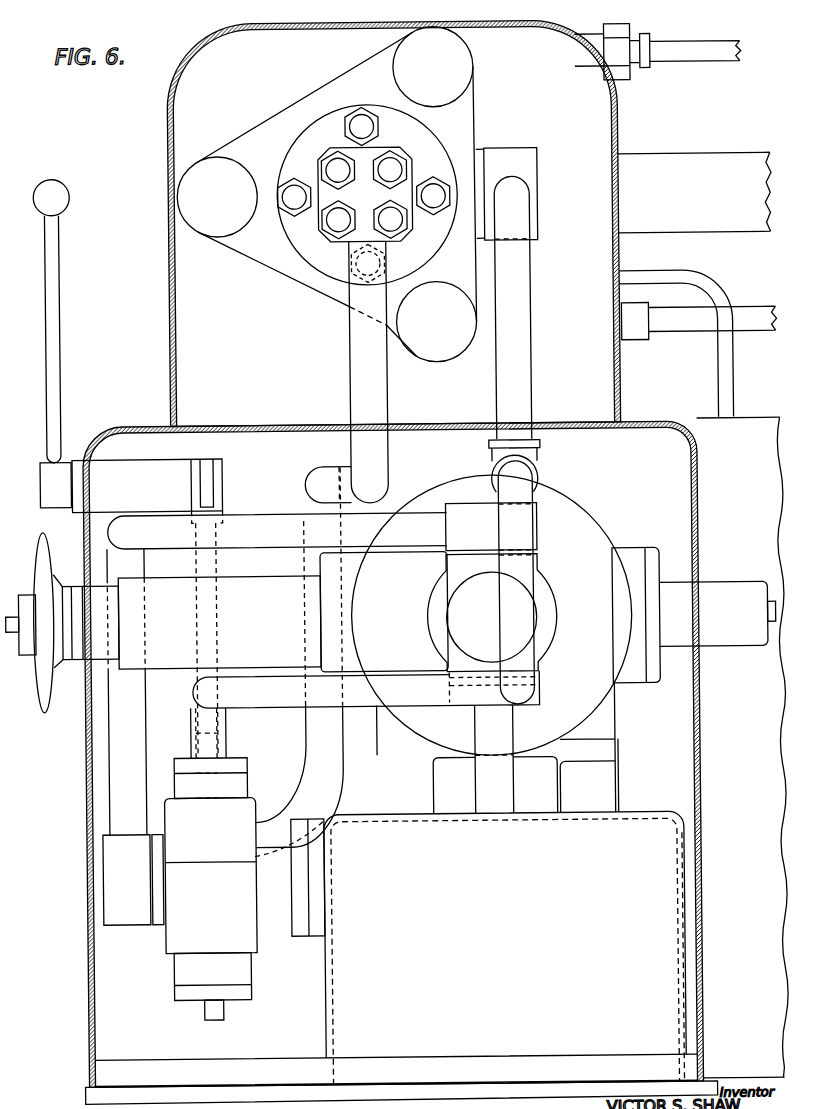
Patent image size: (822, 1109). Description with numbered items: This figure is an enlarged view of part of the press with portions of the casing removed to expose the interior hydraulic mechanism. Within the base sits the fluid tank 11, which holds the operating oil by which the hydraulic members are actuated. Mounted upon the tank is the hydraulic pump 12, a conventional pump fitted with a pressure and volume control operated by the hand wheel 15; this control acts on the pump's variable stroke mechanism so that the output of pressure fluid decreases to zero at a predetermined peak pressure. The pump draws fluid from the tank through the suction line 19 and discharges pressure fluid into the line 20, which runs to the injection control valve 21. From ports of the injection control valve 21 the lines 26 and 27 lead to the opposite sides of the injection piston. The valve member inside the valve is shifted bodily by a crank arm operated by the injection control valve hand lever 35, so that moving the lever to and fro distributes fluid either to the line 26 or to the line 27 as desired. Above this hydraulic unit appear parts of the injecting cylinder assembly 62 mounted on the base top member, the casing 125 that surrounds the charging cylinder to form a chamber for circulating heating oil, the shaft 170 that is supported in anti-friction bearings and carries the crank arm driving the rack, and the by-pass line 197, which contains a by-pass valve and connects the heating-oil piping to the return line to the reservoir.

The fluid tank 11 is at (645, 827).
The hydraulic pump 12 is at (569, 520).
The hand wheel 15 is at (36, 698).
The suction line 19 is at (490, 803).
The pressure line 20 is at (260, 515).
The injection control valve 21 is at (241, 938).
The line 26 is at (364, 390).
The line 27 is at (523, 379).
The injection control valve hand lever 35 is at (57, 368).
The injecting cylinder assembly 62 is at (394, 116).
The casing 125 is at (699, 165).
The shaft 170 is at (684, 328).
The by-pass line 197 is at (702, 47).